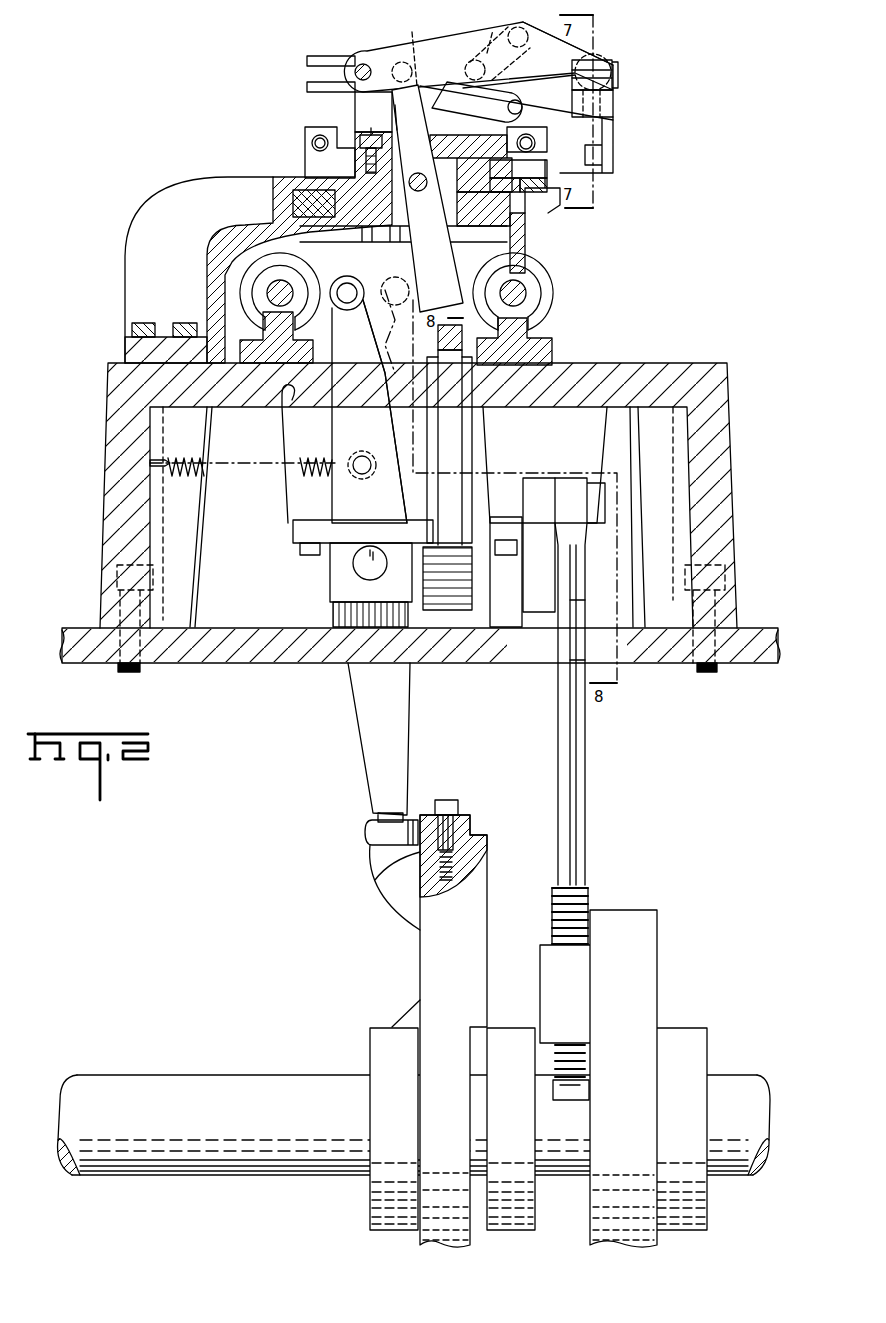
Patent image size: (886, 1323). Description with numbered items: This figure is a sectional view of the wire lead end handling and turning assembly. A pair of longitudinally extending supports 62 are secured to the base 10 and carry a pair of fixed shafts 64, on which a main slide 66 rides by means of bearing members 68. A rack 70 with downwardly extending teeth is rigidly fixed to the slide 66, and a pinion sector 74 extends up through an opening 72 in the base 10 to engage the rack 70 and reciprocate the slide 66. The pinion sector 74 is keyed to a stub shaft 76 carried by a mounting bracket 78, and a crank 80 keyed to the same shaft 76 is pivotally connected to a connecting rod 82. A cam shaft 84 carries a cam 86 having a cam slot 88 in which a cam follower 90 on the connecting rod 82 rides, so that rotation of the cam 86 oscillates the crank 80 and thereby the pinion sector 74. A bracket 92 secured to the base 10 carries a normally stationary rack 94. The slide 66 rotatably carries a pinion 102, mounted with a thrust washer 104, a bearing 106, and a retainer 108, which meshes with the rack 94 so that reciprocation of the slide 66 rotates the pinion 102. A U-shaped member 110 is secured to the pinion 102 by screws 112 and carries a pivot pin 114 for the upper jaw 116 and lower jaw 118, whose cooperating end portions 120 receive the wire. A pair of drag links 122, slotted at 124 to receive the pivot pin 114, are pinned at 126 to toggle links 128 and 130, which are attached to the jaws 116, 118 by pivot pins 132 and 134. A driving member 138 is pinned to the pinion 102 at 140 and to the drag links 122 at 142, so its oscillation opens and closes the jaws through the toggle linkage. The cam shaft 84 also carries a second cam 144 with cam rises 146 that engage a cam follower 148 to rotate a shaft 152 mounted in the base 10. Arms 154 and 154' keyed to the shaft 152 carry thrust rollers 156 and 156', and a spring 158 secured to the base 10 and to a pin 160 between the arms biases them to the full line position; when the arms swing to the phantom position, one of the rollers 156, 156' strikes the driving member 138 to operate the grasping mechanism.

The base 10 is at (112, 410).
The supports 62 is at (300, 352).
The shafts 64 is at (396, 293).
The main slide 66 is at (528, 244).
The bearing members 68 is at (230, 272).
The rack 70 is at (386, 368).
The opening 72 is at (312, 400).
The pinion sector 74 is at (452, 431).
The stub shaft 76 is at (480, 578).
The mounting bracket 78 is at (507, 517).
The crank 80 is at (540, 490).
The connecting rod 82 is at (587, 787).
The cam shaft 84 is at (255, 1075).
The cam 86 is at (645, 962).
The cam slot 88 is at (612, 950).
The cam follower 90 is at (615, 1000).
The bracket 92 is at (175, 212).
The rack 94 is at (293, 200).
The pinion 102 is at (512, 208).
The thrust washer 104 is at (405, 226).
The bearing 106 is at (350, 175).
The retainer 108 is at (507, 178).
The U-shaped member 110 is at (355, 102).
The screws 112 is at (371, 128).
The pivot pin 114 is at (363, 64).
The upper jaw 116 is at (470, 22).
The lower jaw 118 is at (440, 110).
The end portions 120 is at (618, 82).
The drag links 122 is at (409, 52).
The slot 124 is at (307, 60).
The pin 126 is at (500, 41).
The toggle link 128 is at (508, 62).
The toggle link 130 is at (465, 72).
The pivot pin 132 is at (540, 30).
The pivot pin 134 is at (535, 132).
The driving member 138 is at (436, 217).
The pin 140 is at (418, 172).
The pin 142 is at (408, 117).
The second cam 144 is at (432, 967).
The cam rises 146 is at (395, 900).
The cam follower 148 is at (365, 830).
The shaft 152 is at (352, 562).
The arm 154 is at (363, 427).
The arm 154' is at (393, 331).
The thrust roller 156 is at (348, 279).
The thrust roller 156' is at (415, 275).
The spring 158 is at (300, 483).
The pin 160 is at (370, 458).